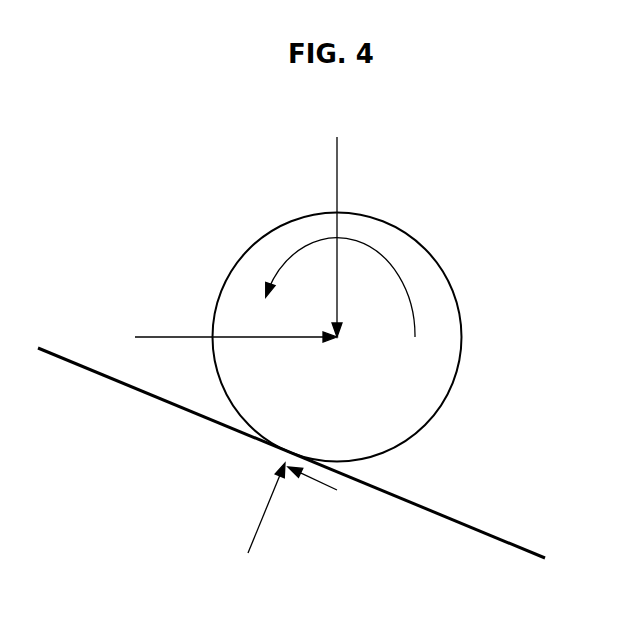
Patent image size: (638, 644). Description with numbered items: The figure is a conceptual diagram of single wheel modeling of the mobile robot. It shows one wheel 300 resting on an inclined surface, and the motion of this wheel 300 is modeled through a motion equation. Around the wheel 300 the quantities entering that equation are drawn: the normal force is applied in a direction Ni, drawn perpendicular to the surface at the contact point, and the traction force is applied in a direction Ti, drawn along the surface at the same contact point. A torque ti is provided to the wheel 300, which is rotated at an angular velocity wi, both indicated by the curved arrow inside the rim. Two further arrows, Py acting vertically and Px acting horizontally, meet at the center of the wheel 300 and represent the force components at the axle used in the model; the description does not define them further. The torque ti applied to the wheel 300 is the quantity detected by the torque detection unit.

The wheel 300 is at (433, 387).
The vertical force component Py is at (322, 237).
The horizontal force component Px is at (236, 322).
The angular velocity wi is at (344, 302).
The torque ti is at (459, 245).
The normal force Ni is at (257, 522).
The traction force Ti is at (319, 493).